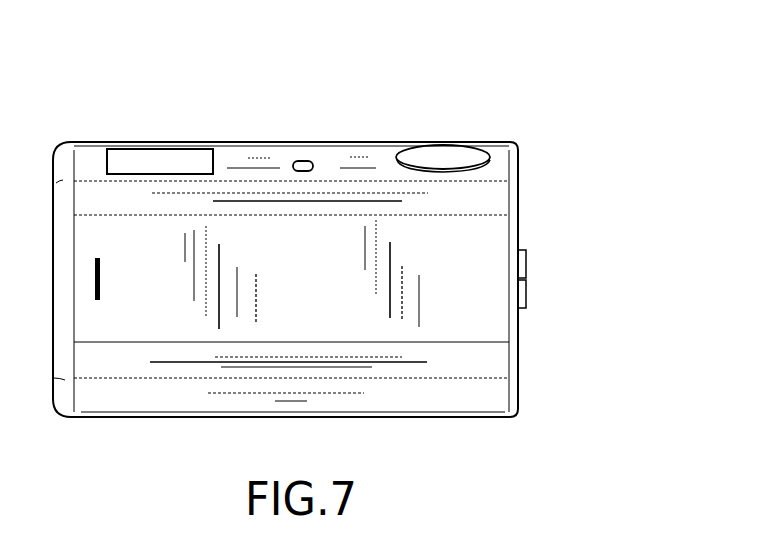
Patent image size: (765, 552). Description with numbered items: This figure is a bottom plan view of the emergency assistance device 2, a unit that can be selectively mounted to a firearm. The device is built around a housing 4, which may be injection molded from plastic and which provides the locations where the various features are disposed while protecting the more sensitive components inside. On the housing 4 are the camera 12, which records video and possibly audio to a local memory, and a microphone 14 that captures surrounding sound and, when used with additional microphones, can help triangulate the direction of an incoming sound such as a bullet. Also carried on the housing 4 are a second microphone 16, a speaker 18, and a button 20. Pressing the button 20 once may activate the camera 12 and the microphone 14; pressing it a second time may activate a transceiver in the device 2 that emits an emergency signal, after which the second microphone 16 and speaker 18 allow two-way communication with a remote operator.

The emergency assistance device 2 is at (541, 103).
The housing 4 is at (443, 403).
The camera 12 is at (526, 259).
The microphone 14 is at (526, 291).
The second microphone 16 is at (303, 161).
The speaker 18 is at (147, 160).
The button 20 is at (418, 150).